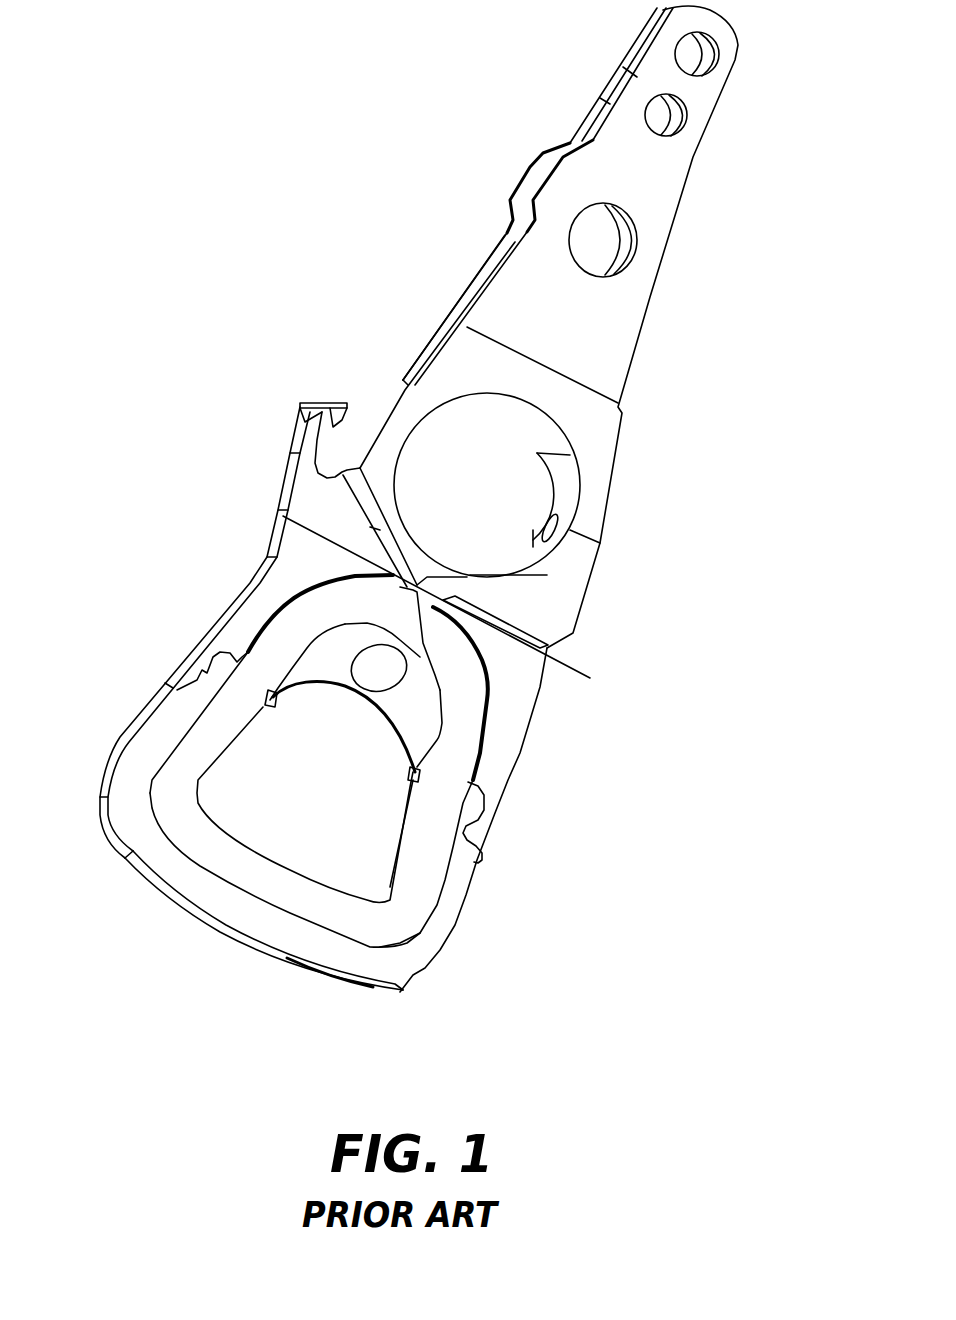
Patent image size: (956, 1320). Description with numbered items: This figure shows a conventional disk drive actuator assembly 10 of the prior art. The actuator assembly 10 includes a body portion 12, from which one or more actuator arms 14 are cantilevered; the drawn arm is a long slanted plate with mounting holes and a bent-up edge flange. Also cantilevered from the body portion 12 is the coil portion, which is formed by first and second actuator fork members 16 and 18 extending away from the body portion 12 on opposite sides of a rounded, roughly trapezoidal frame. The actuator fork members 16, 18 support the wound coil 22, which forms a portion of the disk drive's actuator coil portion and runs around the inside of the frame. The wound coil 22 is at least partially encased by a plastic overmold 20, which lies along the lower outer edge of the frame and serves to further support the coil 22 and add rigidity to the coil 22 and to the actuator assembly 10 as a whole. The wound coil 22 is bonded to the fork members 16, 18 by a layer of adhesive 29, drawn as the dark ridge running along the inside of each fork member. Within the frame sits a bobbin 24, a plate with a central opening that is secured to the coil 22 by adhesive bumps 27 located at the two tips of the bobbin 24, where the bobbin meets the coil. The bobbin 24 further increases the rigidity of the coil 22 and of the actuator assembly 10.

The actuator assembly 10 is at (286, 335).
The body portion 12 is at (393, 393).
The actuator arm 14 is at (637, 77).
The first actuator fork member 16 is at (500, 753).
The second actuator fork member 18 is at (243, 627).
The plastic overmold 20 is at (410, 973).
The wound coil 22 is at (230, 860).
The bobbin 24 is at (407, 710).
The adhesive bumps 27 is at (273, 707).
The layer of adhesive 29 is at (343, 577).